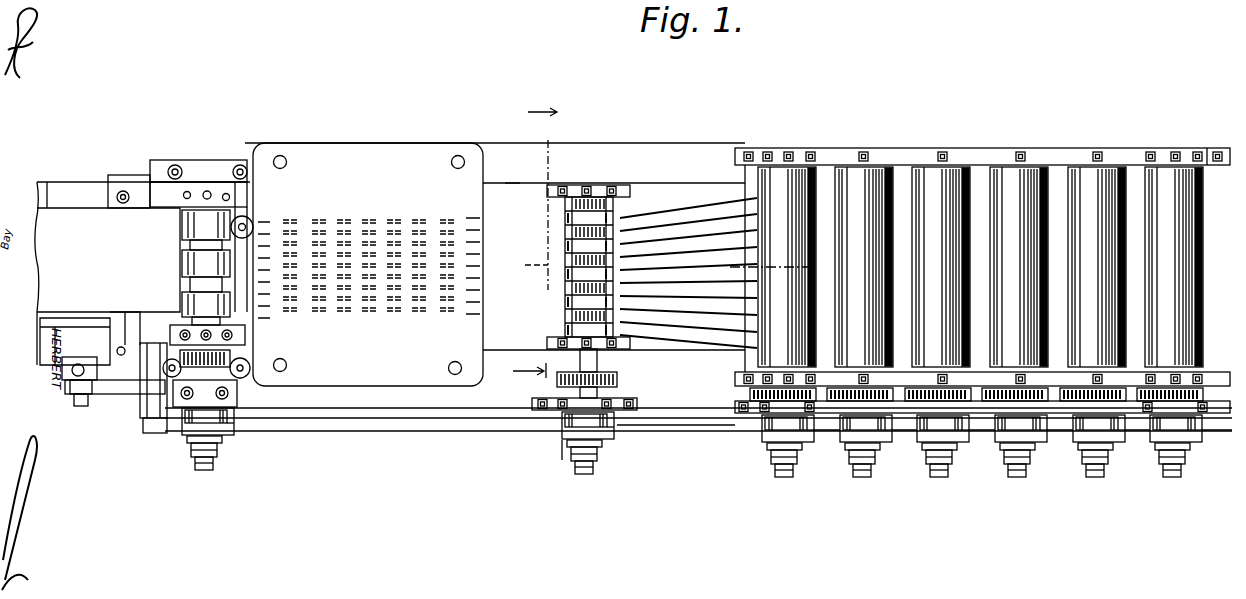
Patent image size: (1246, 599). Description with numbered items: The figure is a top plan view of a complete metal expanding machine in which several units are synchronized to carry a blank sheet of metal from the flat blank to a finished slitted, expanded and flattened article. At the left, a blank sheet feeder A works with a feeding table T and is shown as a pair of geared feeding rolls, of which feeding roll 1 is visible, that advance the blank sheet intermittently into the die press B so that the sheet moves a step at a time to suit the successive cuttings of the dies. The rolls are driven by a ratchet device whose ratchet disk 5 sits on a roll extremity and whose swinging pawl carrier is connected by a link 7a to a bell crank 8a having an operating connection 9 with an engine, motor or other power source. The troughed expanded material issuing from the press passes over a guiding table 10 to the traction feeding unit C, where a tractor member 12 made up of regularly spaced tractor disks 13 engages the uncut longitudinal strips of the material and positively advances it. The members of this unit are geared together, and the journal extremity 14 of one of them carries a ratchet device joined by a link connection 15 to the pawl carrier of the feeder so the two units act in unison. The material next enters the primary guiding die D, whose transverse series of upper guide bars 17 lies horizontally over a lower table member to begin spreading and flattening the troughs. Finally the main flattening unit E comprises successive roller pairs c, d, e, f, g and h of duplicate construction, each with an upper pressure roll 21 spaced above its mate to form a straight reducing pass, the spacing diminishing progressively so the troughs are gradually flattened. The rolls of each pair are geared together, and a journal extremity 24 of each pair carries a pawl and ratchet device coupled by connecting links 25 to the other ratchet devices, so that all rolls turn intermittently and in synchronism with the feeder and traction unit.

The feeding roll 1 is at (182, 298).
The ratchet disk 5 is at (535, 252).
The link 7a is at (167, 430).
The bell crank 8a is at (110, 395).
The operating connection 9 is at (78, 372).
The guiding table 10 is at (512, 187).
The tractor member 12 is at (566, 210).
The tractor disk 13 is at (566, 244).
The journal extremity 14 is at (590, 468).
The link connection 15 is at (390, 425).
The guide bar 17 is at (688, 212).
The pressure roll 21 is at (978, 244).
The journal extremity 24 is at (785, 477).
The connecting link 25 is at (700, 425).
The blank sheet feeder A is at (198, 247).
The die press B is at (368, 264).
The traction feeding unit C is at (588, 252).
The primary guiding die D is at (692, 172).
The main flattening unit E is at (982, 140).
The feeding table T is at (142, 273).
The roller pair c is at (800, 203).
The roller pair d is at (880, 203).
The roller pair e is at (958, 203).
The roller pair f is at (1036, 203).
The roller pair g is at (1114, 203).
The roller pair h is at (1196, 203).